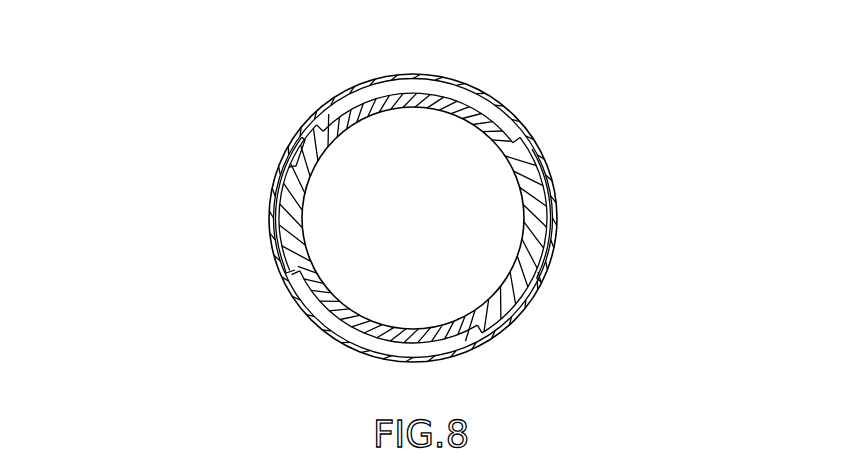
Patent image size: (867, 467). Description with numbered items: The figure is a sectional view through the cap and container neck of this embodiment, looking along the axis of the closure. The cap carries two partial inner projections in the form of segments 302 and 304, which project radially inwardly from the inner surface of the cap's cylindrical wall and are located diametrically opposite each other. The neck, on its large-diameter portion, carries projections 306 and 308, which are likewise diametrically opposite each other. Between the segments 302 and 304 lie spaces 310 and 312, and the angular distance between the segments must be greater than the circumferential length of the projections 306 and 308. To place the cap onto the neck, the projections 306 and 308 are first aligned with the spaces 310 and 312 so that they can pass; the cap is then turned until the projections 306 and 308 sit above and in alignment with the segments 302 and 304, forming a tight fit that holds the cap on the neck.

The segment 302 is at (287, 272).
The segment 304 is at (547, 277).
The projection 306 is at (290, 165).
The projection 308 is at (543, 198).
The space 310 is at (458, 93).
The space 312 is at (338, 330).